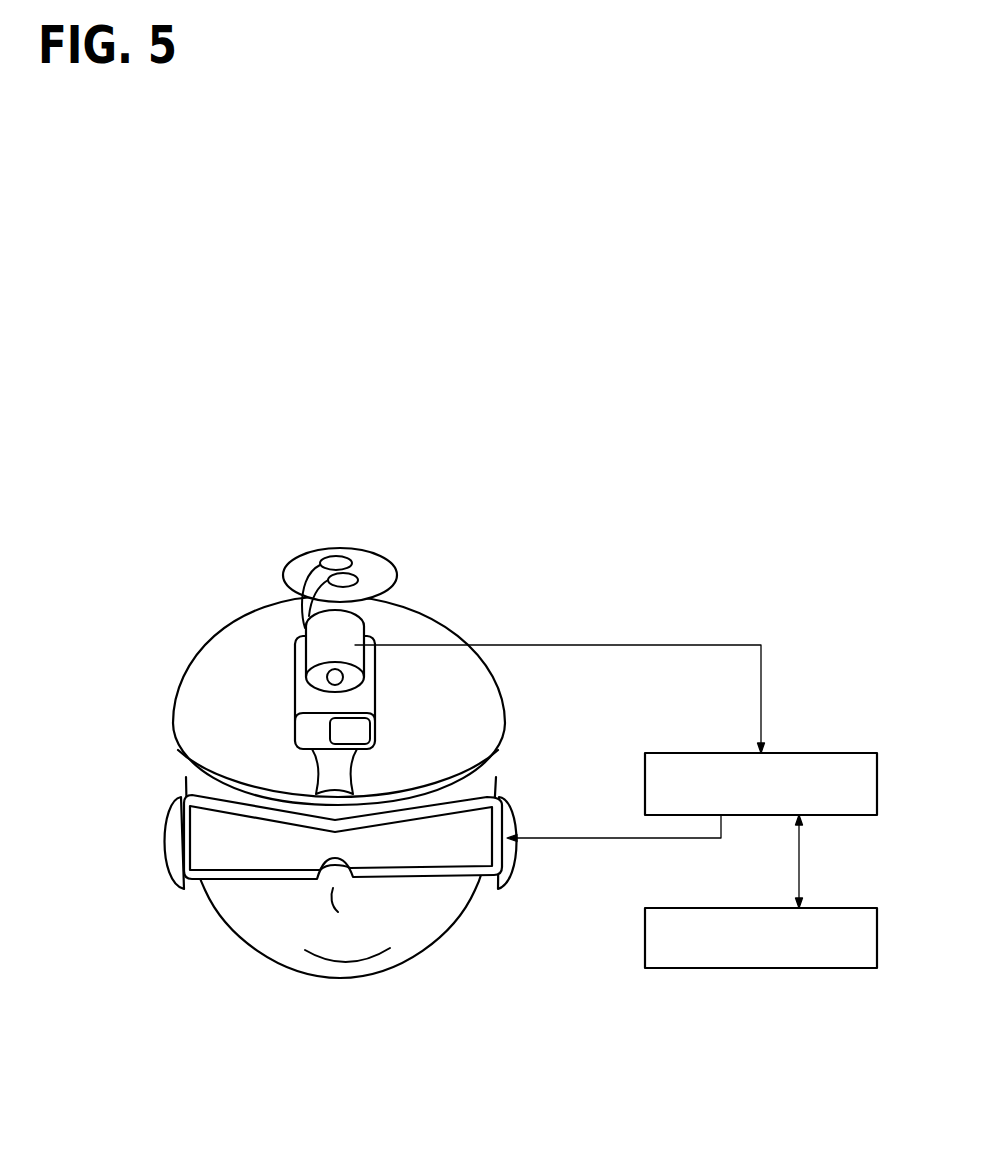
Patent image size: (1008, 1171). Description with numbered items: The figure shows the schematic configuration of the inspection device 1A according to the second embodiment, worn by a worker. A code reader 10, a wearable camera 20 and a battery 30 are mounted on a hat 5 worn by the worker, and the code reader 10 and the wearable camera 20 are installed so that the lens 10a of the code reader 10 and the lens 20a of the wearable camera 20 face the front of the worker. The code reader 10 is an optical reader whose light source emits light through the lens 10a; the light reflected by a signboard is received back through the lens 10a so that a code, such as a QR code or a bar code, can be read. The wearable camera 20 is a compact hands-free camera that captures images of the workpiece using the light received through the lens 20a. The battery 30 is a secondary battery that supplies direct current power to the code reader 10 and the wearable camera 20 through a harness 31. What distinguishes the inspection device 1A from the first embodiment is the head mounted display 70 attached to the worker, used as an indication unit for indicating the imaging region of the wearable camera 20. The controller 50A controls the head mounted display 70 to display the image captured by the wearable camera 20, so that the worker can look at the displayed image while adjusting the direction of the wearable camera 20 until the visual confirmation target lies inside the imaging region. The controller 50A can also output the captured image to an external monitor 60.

The inspection device 1A is at (173, 520).
The hat 5 is at (462, 748).
The code reader 10 is at (377, 709).
The lens 10a is at (355, 732).
The wearable camera 20 is at (333, 641).
The lens 20a is at (327, 677).
The battery 30 is at (370, 558).
The harness 31 is at (335, 606).
The controller 50A is at (842, 752).
The external monitor 60 is at (842, 908).
The head mounted display 70 is at (442, 878).